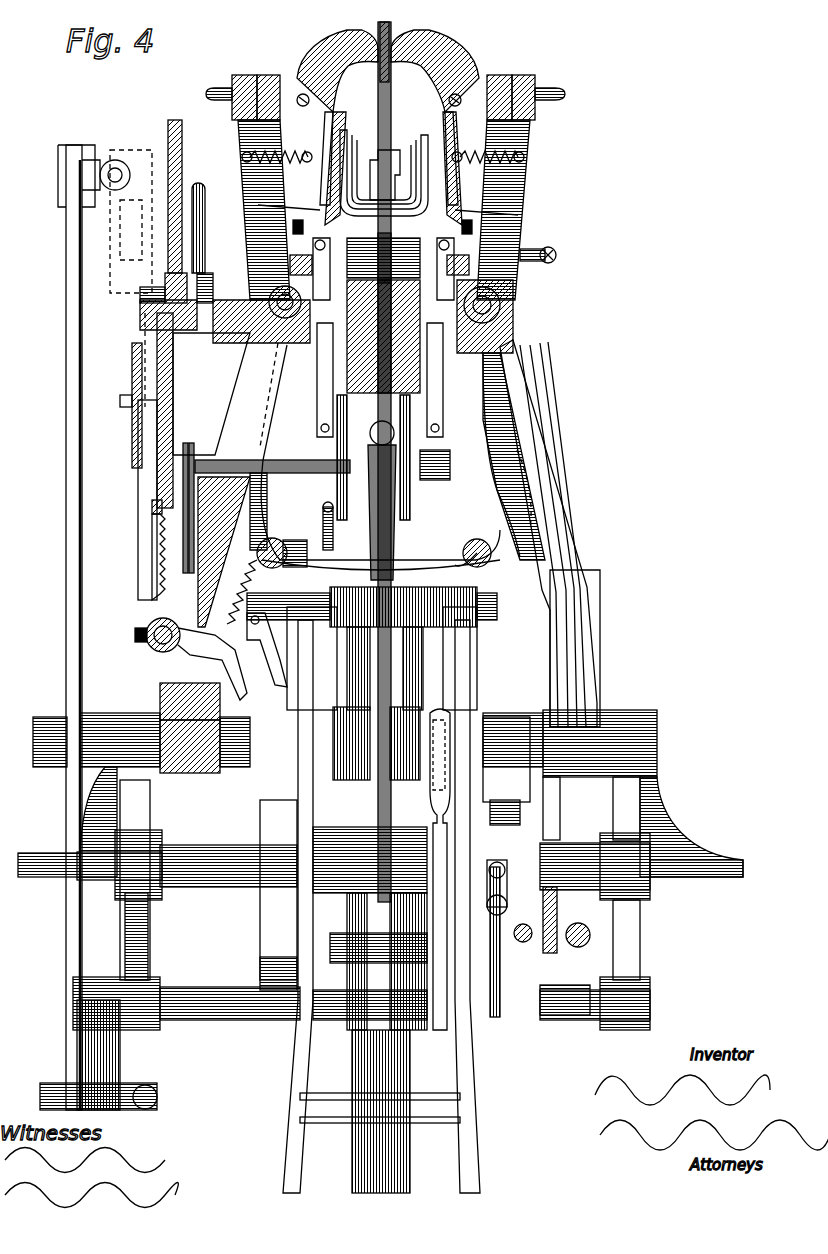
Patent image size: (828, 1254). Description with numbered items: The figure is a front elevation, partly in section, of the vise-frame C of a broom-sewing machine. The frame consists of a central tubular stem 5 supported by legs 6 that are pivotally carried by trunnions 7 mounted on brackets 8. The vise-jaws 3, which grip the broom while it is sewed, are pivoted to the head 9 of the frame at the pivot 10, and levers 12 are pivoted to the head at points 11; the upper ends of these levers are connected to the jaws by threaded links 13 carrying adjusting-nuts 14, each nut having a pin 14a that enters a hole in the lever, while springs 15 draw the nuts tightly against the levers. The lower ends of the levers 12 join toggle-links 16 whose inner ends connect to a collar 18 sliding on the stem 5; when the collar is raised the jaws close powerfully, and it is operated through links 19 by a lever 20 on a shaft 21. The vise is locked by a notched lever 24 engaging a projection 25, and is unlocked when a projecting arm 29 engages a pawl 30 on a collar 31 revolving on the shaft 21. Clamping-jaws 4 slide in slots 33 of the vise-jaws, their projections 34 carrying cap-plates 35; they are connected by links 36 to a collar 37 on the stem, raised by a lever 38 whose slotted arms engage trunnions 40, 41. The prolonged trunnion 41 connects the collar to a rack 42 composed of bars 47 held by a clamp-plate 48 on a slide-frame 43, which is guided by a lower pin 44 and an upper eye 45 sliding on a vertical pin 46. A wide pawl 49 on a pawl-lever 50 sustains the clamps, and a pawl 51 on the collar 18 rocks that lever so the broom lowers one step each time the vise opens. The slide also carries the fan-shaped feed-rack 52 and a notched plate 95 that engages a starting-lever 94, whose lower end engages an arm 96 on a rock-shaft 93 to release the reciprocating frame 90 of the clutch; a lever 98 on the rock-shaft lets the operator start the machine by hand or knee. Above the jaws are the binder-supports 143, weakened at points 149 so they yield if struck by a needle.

The vise-jaws 3 is at (345, 48).
The weakened points 149 is at (391, 60).
The binder-supports 143 is at (405, 96).
The links 13 is at (394, 75).
The adjusting-nuts 14 is at (515, 75).
The pin 14a is at (540, 75).
The clamping-jaws 4 is at (352, 135).
The slots 33 is at (323, 125).
The springs 15 is at (238, 175).
The levers 12 is at (530, 200).
The projections 34 is at (258, 205).
The cap-plates 35 is at (293, 230).
The pivot 10 is at (405, 300).
The pivot points 11 is at (265, 295).
The head 9 is at (420, 320).
The legs 6 is at (160, 692).
The vise-frame C is at (578, 560).
The links 36 is at (317, 405).
The trunnion 40 is at (450, 460).
The collar 37 is at (420, 500).
The trunnion 41 is at (272, 480).
The lever 38 is at (323, 523).
The feed-rack 52 is at (175, 120).
The vertical pin 46 is at (192, 217).
The eye 45 is at (213, 278).
The notched plate 95 is at (110, 262).
The starting-lever 94 is at (66, 433).
The clamp-plate 48 is at (132, 372).
The slide-frame 43 is at (173, 366).
The bars 47 is at (138, 488).
The pawl 49 is at (152, 525).
The rack 42 is at (152, 552).
The pin 44 is at (197, 580).
The pawl-lever 50 is at (205, 650).
The toggle-links 16 is at (285, 562).
The pawl 51 is at (258, 683).
The collar 18 is at (372, 607).
The links 19 is at (312, 675).
The lever 98 is at (450, 730).
The projecting arm 29 is at (530, 785).
The pawl 30 is at (520, 808).
The collar 31 is at (499, 870).
The lever 20 is at (290, 1083).
The central tubular stem 5 is at (410, 1070).
The brackets 8 is at (80, 835).
The trunnions 7 is at (210, 770).
The shaft 21 is at (245, 883).
The reciprocating frame 90 is at (400, 935).
The notched lever 24 is at (507, 965).
The projection 25 is at (520, 925).
The arm 96 is at (120, 1057).
The rock-shaft 93 is at (565, 1020).